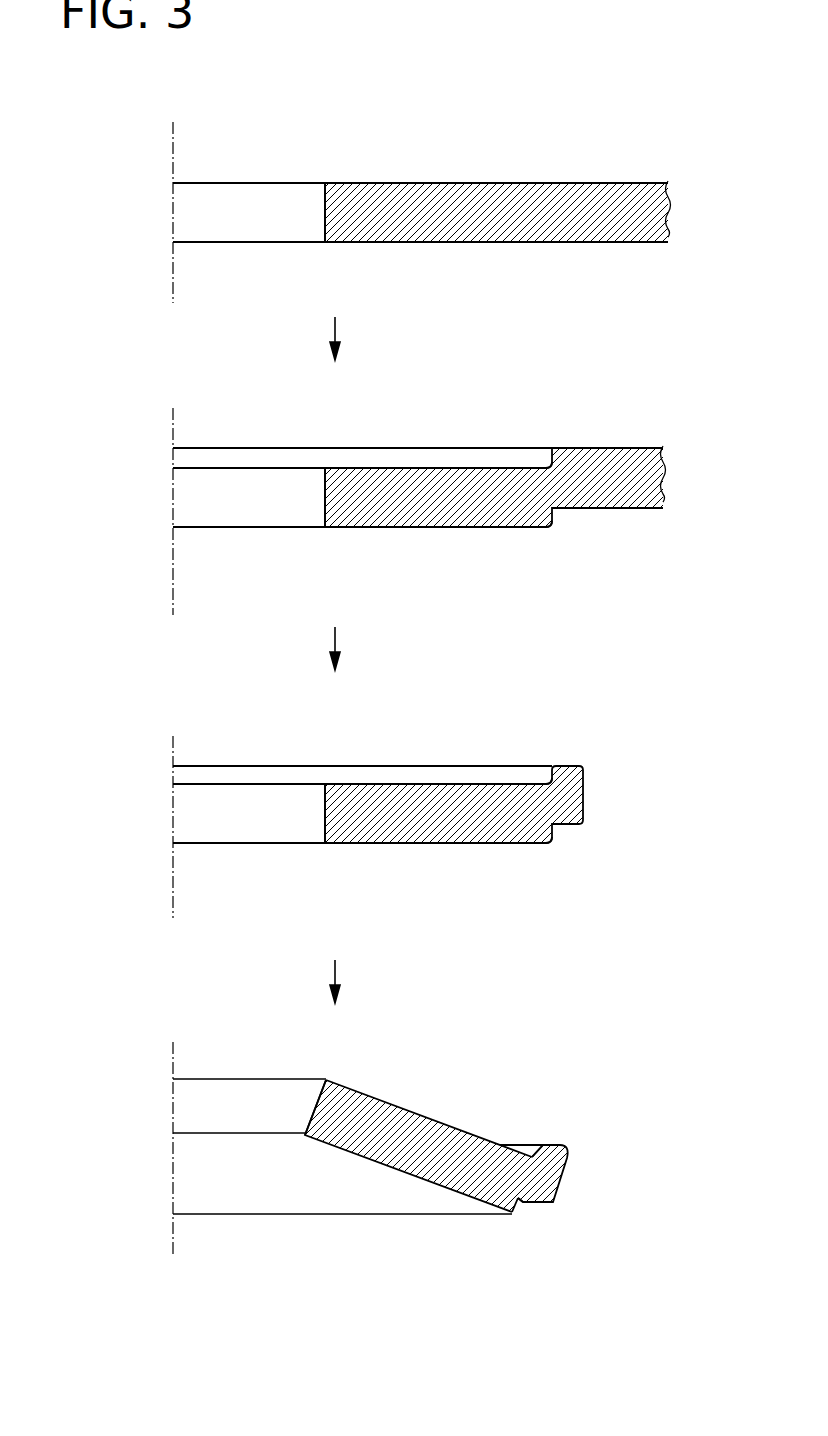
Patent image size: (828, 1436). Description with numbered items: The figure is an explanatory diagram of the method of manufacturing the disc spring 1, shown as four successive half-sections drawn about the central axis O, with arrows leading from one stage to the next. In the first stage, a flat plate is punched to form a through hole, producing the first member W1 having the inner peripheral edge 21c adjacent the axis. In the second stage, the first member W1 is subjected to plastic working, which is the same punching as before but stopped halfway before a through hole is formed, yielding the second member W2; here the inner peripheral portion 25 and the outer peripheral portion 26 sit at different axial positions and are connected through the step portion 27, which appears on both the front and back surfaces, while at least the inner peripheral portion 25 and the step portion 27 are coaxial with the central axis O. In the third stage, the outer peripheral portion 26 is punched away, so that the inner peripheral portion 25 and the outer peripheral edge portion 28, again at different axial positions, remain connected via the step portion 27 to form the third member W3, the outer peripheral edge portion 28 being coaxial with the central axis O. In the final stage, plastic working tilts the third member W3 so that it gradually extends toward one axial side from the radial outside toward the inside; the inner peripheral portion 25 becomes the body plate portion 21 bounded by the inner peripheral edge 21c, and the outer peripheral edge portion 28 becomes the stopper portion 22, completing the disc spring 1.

The central axis O is at (173, 134).
The first member W1 is at (595, 183).
The second member W2 is at (427, 446).
The third member W3 is at (411, 762).
The disc spring 1 is at (425, 1122).
The body plate portion 21 is at (417, 1112).
The inner peripheral edge 21c is at (325, 205).
The stopper portion 22 is at (567, 1145).
The inner peripheral portion 25 is at (438, 494).
The outer peripheral portion 26 is at (572, 448).
The step portion 27 is at (548, 464).
The outer peripheral edge portion 28 is at (583, 768).